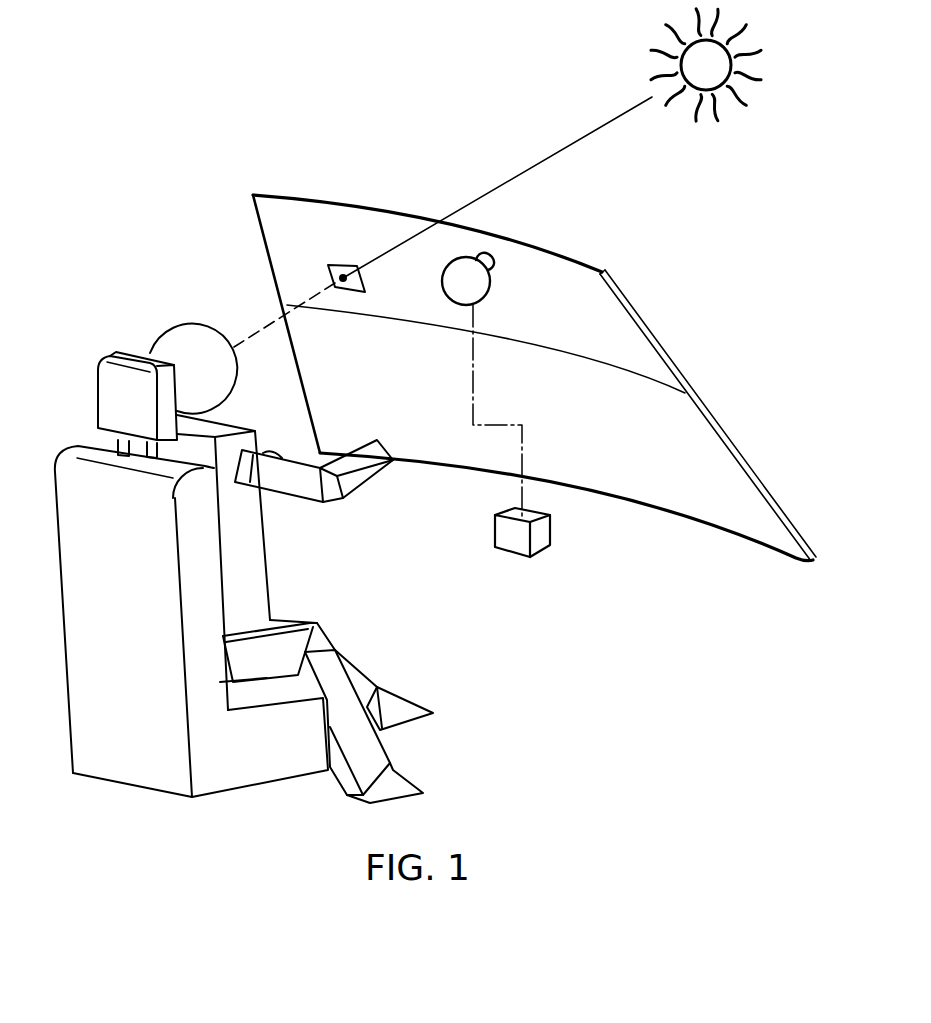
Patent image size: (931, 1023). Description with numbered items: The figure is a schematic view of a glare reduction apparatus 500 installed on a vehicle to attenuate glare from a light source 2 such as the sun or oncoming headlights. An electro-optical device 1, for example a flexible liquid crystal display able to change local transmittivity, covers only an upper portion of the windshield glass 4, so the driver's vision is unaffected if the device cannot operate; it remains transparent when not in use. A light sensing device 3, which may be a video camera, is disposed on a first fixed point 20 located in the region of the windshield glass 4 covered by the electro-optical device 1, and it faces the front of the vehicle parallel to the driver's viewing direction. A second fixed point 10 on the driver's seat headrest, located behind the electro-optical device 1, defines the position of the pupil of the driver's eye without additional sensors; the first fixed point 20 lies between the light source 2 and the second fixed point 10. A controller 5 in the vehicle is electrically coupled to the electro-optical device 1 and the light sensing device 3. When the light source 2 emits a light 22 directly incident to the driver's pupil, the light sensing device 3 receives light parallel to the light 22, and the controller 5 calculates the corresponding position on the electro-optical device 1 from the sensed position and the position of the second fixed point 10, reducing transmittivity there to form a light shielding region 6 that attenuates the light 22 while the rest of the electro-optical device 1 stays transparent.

The glare reduction apparatus 500 is at (166, 82).
The light source 2 is at (735, 62).
The light 22 is at (538, 161).
The electro-optical device 1 is at (534, 378).
The windshield glass 4 is at (723, 460).
The light shielding region 6 is at (337, 267).
The light sensing device 3 is at (479, 385).
The first fixed point 20 is at (491, 296).
The controller 5 is at (550, 542).
The second fixed point 10 is at (108, 398).